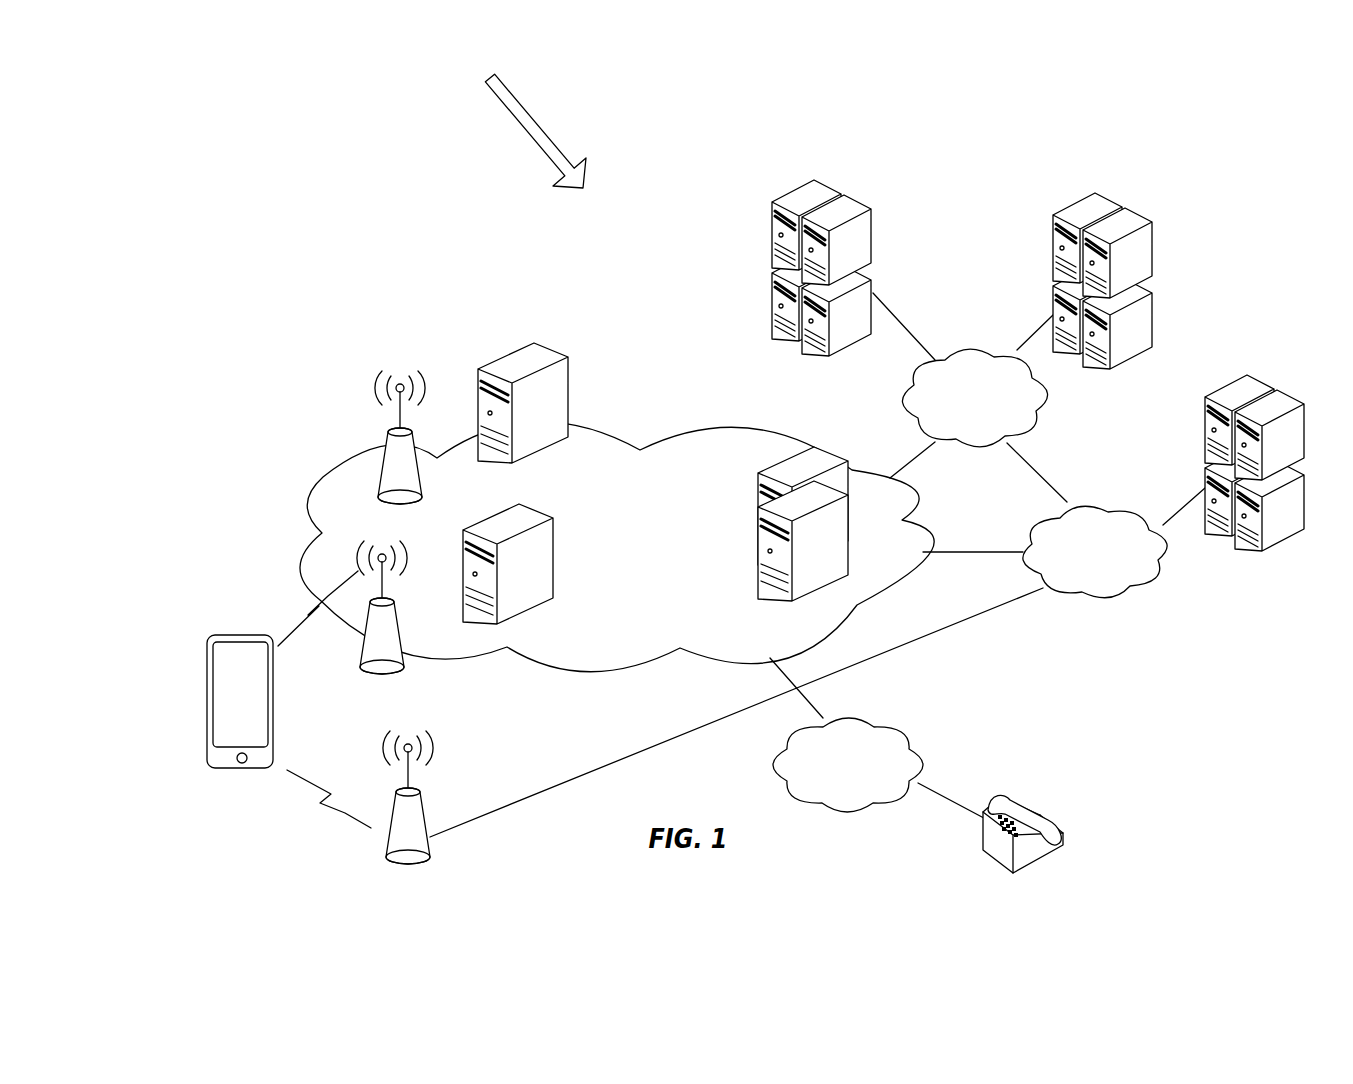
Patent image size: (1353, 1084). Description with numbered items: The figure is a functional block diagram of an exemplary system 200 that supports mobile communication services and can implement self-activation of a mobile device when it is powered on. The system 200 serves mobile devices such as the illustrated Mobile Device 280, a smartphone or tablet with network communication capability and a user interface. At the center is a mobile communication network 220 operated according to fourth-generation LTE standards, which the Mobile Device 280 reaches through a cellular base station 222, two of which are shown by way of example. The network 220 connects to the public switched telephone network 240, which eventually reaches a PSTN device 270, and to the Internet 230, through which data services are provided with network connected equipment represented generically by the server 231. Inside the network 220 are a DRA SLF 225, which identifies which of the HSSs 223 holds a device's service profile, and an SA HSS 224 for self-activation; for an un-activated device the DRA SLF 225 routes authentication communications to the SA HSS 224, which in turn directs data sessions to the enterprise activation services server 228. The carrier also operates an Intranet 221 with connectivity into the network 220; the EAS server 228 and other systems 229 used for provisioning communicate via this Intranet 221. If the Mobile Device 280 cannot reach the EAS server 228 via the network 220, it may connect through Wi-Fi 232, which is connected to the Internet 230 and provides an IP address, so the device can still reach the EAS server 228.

The system 200 is at (522, 124).
The mobile communication network 220 is at (670, 433).
The Intranet 221 is at (1052, 413).
The cellular base station 222 is at (380, 455).
The HSS 223 is at (830, 452).
The SA HSS 224 is at (568, 352).
The DRA SLF 225 is at (557, 533).
The enterprise activation services server 228 is at (872, 222).
The other systems 229 is at (1153, 280).
The Internet 230 is at (1080, 600).
The server 231 is at (1205, 465).
The Wi-Fi 232 is at (430, 843).
The public switched telephone network 240 is at (920, 752).
The PSTN device 270 is at (983, 855).
The Mobile Device 280 is at (207, 680).